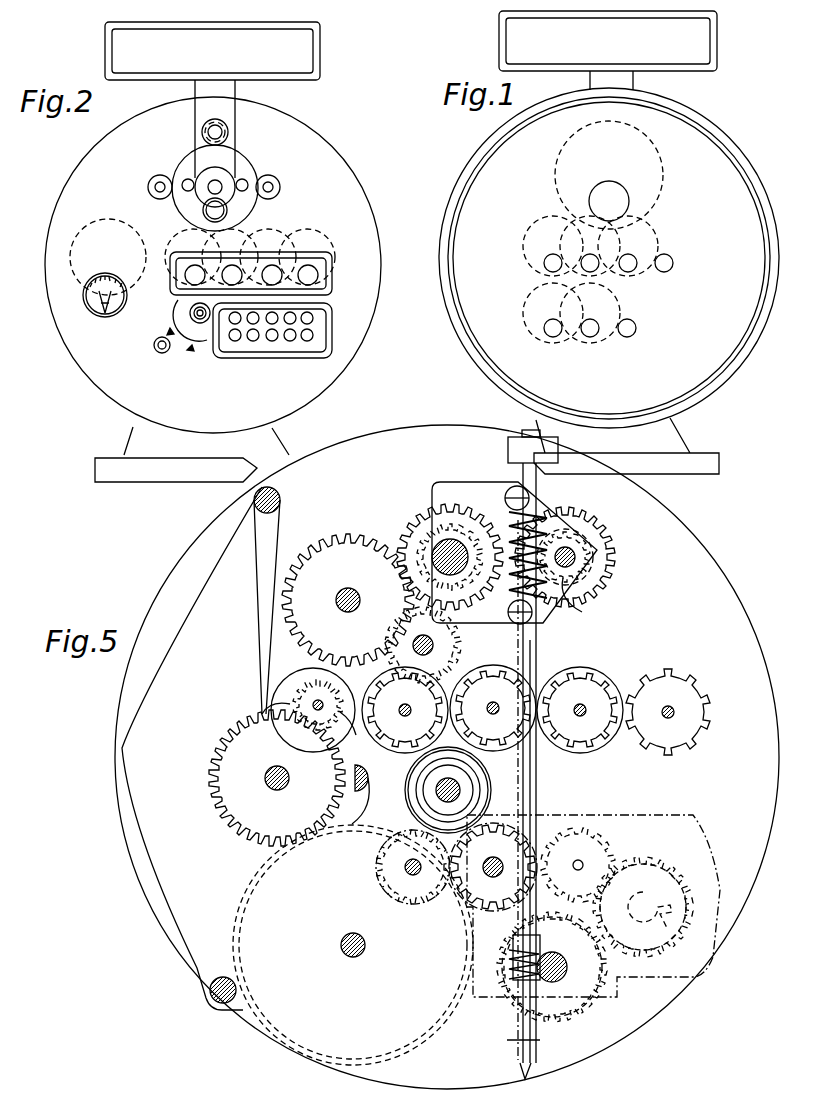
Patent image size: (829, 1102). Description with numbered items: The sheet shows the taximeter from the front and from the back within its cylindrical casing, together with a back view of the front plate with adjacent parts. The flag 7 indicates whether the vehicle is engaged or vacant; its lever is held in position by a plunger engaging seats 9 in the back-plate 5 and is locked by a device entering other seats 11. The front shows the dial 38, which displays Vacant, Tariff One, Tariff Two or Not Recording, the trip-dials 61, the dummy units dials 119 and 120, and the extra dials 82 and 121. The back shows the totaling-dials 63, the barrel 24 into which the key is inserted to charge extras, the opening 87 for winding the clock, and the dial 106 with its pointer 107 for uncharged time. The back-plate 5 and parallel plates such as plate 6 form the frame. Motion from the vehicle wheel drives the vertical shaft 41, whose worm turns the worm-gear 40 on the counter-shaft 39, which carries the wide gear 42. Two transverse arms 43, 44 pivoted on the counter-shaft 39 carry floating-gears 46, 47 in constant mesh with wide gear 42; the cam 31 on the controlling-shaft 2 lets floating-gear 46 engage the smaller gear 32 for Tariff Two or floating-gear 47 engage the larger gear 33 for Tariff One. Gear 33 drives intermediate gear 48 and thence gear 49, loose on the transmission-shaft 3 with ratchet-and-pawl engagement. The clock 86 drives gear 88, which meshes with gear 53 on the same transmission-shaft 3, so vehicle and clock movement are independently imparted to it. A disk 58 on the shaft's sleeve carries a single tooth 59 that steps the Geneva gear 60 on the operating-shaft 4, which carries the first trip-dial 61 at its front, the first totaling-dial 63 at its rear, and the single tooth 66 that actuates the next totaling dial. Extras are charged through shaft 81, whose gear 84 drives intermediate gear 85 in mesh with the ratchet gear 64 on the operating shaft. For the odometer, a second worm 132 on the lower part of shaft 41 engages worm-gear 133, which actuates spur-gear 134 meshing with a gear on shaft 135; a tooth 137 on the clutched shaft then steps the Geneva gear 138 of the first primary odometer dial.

In FIG. 2, the flag 7 is at (321, 50).
In FIG. 1, the flag 7 is at (718, 47).
In FIG. 2, the back-plate 5 is at (359, 201).
In FIG. 2, the seats 9 is at (188, 179).
In FIG. 2, the seats 11 is at (148, 187).
In FIG. 2, the totaling-dials 63 is at (180, 239).
In FIG. 2, the dial 106 is at (84, 296).
In FIG. 2, the pointer 107 is at (85, 307).
In FIG. 2, the barrel 24 is at (208, 322).
In FIG. 2, the opening 87 is at (162, 354).
In FIG. 1, the dial 38 is at (629, 198).
In FIG. 1, the trip-dials 61 is at (661, 241).
In FIG. 1, the dummy units dial 119 is at (674, 263).
In FIG. 1, the dummy units dial 120 is at (637, 329).
In FIG. 1, the extra dial 121 is at (556, 338).
In FIG. 1, the extra dial 82 is at (605, 340).
In FIG. 5, the frame plate 6 is at (142, 870).
In FIG. 5, the gear 49 is at (286, 668).
In FIG. 5, the intermediate gear 48 is at (317, 541).
In FIG. 5, the larger gear 33 is at (426, 516).
In FIG. 5, the smaller gear 32 is at (430, 535).
In FIG. 5, the cam 31 is at (446, 540).
In FIG. 5, the controlling-shaft 2 is at (432, 557).
In FIG. 5, the floating-gear 46 is at (508, 449).
In FIG. 5, the transverse arm 43 is at (532, 508).
In FIG. 5, the transverse arm 44 is at (580, 612).
In FIG. 5, the wide gear 42 is at (609, 545).
In FIG. 5, the counter-shaft 39 is at (578, 557).
In FIG. 5, the worm-gear 40 is at (596, 582).
In FIG. 5, the floating-gear 47 is at (540, 628).
In FIG. 5, the vertical shaft 41 is at (538, 778).
In FIG. 5, the Geneva gear 60 is at (380, 672).
In FIG. 5, the transmission-shaft 3 is at (313, 710).
In FIG. 5, the gear 53 is at (272, 699).
In FIG. 5, the single tooth 59 is at (349, 721).
In FIG. 5, the operating-shaft 4 is at (405, 710).
In FIG. 5, the single tooth 66 is at (450, 695).
In FIG. 5, the disk 58 is at (292, 738).
In FIG. 5, the gear 88 is at (213, 800).
In FIG. 5, the loose gear 64 is at (421, 790).
In FIG. 5, the clock gear 86 is at (258, 873).
In FIG. 5, the intermediate gear 85 is at (393, 802).
In FIG. 5, the gear 84 is at (460, 896).
In FIG. 5, the shaft 81 is at (474, 884).
In FIG. 5, the second worm 132 is at (509, 988).
In FIG. 5, the Geneva gear 138 is at (620, 840).
In FIG. 5, the shaft 135 is at (660, 893).
In FIG. 5, the tooth 137 is at (666, 955).
In FIG. 5, the worm-gear 133 is at (576, 1000).
In FIG. 5, the spur-gear 134 is at (617, 975).